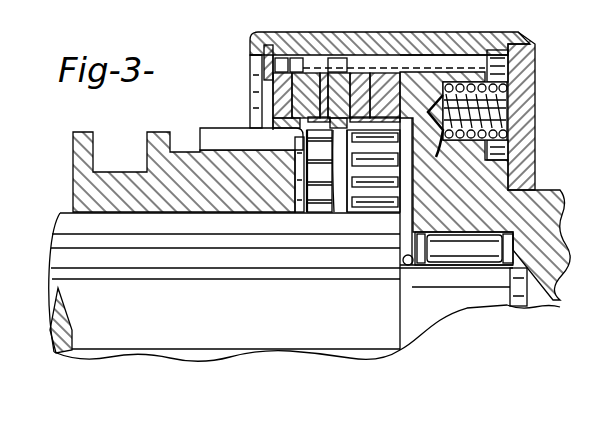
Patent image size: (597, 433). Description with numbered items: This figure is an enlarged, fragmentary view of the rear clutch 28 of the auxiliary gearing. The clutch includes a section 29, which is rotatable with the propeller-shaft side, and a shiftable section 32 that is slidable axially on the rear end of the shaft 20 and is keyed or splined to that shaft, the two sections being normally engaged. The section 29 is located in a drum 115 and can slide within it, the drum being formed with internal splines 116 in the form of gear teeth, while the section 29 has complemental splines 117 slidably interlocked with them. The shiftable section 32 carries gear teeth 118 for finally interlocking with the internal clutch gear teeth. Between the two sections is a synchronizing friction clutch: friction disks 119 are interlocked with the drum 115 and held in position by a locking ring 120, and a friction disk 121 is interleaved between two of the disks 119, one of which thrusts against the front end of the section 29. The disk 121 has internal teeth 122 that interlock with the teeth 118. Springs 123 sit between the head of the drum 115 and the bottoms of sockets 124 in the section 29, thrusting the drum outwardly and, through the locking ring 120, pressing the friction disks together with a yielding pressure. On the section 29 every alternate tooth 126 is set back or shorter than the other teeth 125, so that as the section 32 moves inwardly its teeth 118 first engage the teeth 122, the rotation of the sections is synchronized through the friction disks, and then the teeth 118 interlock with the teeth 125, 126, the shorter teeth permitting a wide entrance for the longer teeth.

The shaft 20 is at (298, 350).
The rear clutch 28 is at (252, 23).
The section 29 is at (378, 58).
The shiftable section 32 is at (193, 163).
The drum 115 is at (446, 33).
The internal splines 116 is at (518, 32).
The complemental splines 117 is at (480, 55).
The gear teeth 118 is at (233, 140).
The friction disks 119 is at (338, 62).
The locking ring 120 is at (300, 22).
The friction disk 121 is at (340, 62).
The internal teeth 122 is at (320, 130).
The springs 123 is at (500, 95).
The sockets 124 is at (436, 150).
The teeth 125 is at (340, 140).
The alternate tooth 126 is at (380, 182).